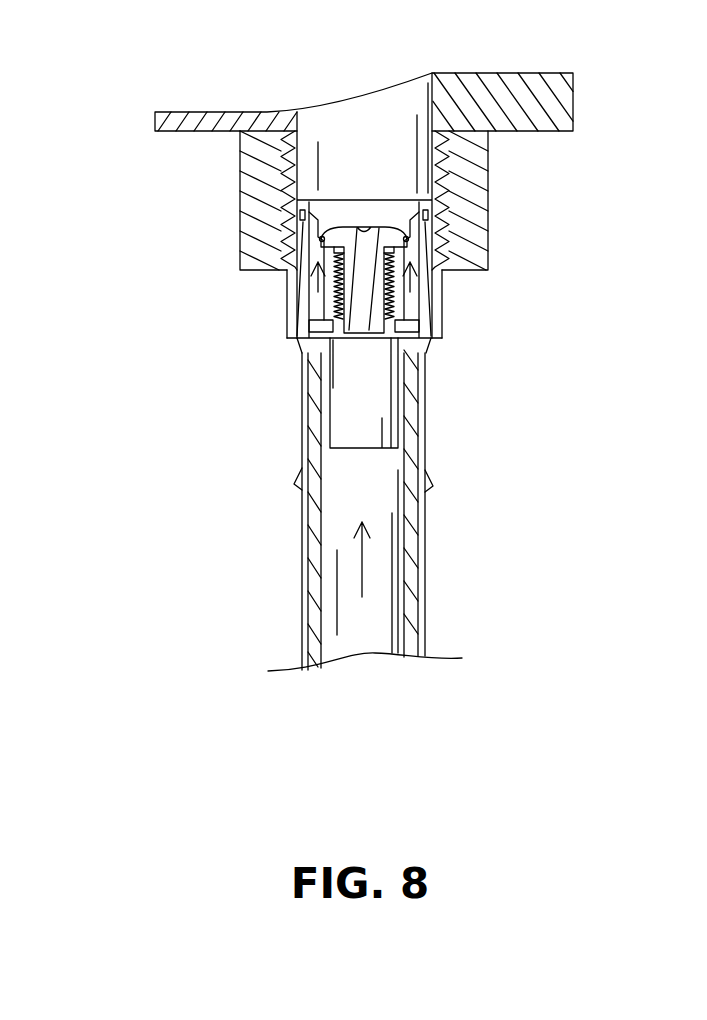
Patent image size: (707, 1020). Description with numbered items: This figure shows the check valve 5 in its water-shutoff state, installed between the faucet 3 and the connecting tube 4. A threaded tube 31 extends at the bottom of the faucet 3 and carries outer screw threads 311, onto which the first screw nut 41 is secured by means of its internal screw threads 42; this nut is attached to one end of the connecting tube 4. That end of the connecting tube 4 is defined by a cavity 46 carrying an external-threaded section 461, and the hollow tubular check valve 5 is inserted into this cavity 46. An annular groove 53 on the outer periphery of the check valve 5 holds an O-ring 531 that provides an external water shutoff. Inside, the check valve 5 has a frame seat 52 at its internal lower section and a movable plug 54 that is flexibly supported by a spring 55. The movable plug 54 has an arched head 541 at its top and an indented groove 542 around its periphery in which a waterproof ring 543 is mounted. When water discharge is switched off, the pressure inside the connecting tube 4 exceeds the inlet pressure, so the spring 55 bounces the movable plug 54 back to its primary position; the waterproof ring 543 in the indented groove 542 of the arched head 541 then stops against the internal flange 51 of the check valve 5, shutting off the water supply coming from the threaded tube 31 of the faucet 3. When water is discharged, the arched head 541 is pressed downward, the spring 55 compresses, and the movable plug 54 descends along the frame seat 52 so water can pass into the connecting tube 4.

The faucet 3 is at (582, 93).
The threaded tube 31 is at (440, 136).
The outer screw threads 311 is at (440, 183).
The first screw nut 41 is at (468, 206).
The internal screw threads 42 is at (460, 238).
The cavity 46 is at (287, 304).
The external-threaded section 461 is at (320, 237).
The check valve 5 is at (295, 338).
The internal flange 51 is at (434, 282).
The frame seat 52 is at (423, 339).
The annular groove 53 is at (293, 203).
The O-ring 531 is at (301, 212).
The movable plug 54 is at (358, 323).
The arched head 541 is at (345, 227).
The indented groove 542 is at (321, 240).
The waterproof ring 543 is at (322, 242).
The spring 55 is at (425, 310).
The connecting tube 4 is at (430, 568).